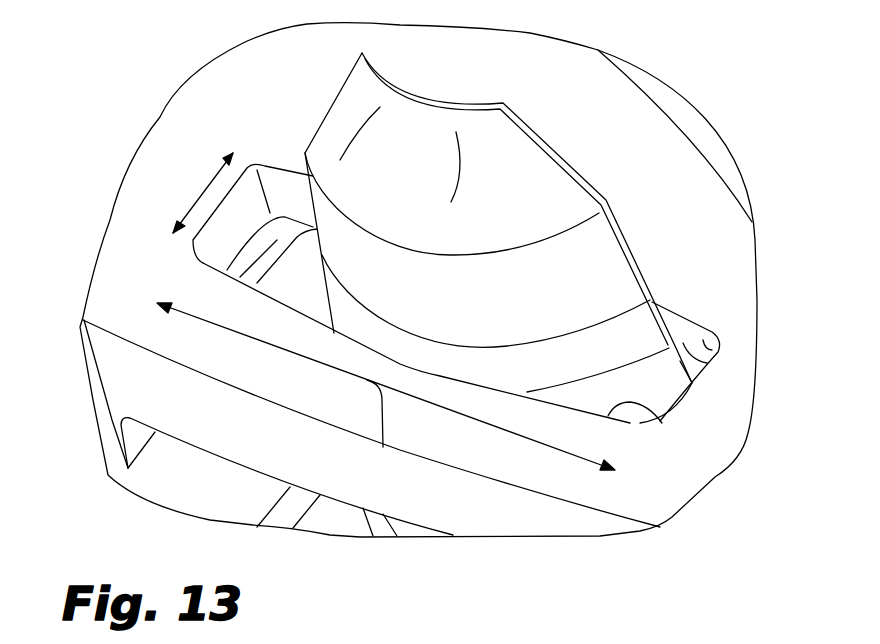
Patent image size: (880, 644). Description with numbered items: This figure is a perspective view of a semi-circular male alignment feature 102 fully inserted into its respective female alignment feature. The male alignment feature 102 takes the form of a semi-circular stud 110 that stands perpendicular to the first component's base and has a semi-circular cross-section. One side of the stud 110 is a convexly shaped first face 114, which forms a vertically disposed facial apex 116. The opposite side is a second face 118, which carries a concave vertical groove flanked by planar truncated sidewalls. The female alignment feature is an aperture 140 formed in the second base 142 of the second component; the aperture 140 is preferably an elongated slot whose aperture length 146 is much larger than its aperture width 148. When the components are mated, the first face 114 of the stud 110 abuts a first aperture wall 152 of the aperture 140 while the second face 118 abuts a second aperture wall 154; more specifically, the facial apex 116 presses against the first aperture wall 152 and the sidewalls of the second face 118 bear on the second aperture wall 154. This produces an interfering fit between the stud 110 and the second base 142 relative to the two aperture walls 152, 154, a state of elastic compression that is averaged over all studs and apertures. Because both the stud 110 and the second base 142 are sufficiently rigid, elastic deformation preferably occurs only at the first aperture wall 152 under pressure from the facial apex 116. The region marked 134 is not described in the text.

The semi-circular male alignment feature 102 is at (587, 175).
The semi-circular stud 110 is at (654, 300).
The first face 114 is at (503, 303).
The facial apex 116 is at (381, 268).
The second face 118 is at (633, 246).
The cylinder top portion 134 is at (380, 143).
The aperture 140 is at (712, 350).
The second base 142 is at (124, 257).
The aperture length 146 is at (386, 395).
The aperture width 148 is at (203, 193).
The first aperture wall 152 is at (662, 423).
The second aperture wall 154 is at (706, 366).